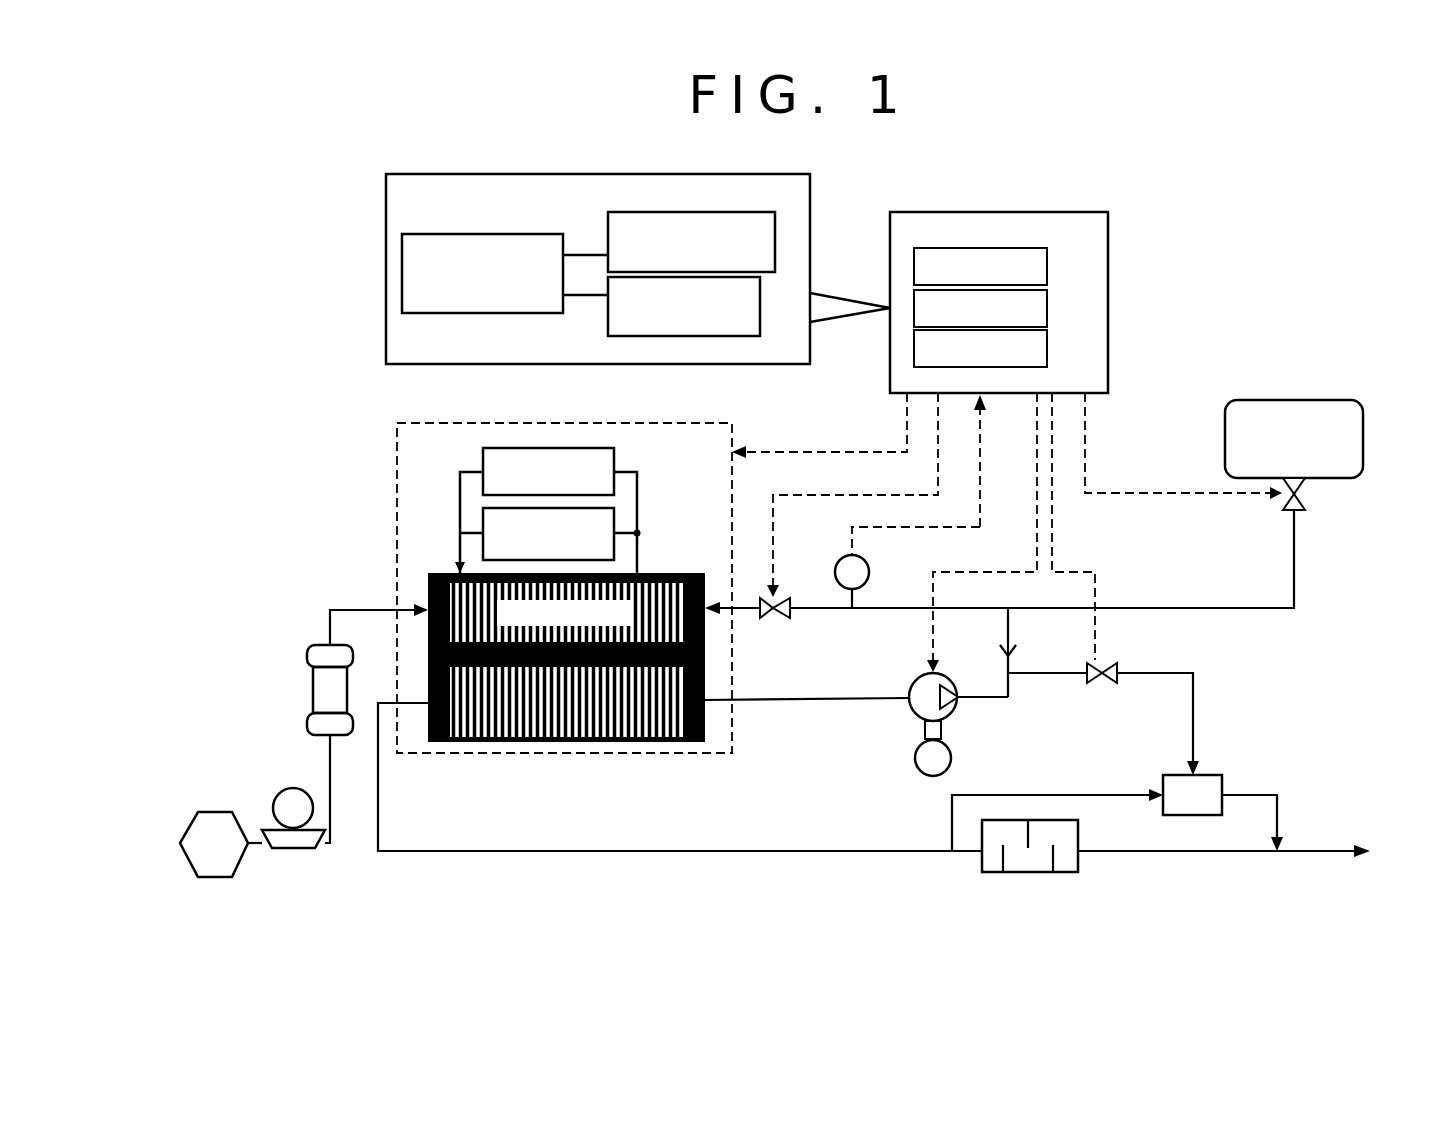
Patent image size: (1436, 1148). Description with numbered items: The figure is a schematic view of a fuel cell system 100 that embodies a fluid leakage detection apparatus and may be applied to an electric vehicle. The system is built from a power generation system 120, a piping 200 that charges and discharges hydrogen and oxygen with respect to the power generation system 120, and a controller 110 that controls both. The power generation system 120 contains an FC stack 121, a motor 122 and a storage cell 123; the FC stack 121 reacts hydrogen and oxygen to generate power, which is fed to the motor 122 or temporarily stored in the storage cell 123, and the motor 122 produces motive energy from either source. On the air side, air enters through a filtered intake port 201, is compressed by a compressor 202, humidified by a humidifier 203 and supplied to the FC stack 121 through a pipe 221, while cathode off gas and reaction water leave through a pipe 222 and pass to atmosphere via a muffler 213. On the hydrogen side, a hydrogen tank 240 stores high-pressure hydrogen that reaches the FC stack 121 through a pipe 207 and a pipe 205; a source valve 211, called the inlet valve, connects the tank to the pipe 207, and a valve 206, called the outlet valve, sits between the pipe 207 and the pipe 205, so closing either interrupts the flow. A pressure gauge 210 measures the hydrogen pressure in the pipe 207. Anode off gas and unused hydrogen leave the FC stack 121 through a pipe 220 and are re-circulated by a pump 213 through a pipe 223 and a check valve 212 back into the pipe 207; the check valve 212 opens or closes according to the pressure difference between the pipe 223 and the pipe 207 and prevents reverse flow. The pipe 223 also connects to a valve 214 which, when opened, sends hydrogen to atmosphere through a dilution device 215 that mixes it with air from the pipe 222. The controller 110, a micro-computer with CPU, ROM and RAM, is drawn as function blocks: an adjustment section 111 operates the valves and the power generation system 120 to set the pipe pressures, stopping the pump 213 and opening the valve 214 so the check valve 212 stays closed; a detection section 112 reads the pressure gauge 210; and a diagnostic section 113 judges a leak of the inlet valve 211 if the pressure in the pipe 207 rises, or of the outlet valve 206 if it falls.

The fuel cell system 100 is at (1308, 227).
The controller 110 is at (1108, 308).
The adjustment section 111 is at (720, 212).
The detection section 112 is at (608, 327).
The diagnostic section 113 is at (470, 234).
The power generation system 120 is at (425, 420).
The FC stack 121 is at (485, 756).
The motor 122 is at (483, 462).
The storage cell 123 is at (483, 520).
The piping 200 is at (846, 826).
The intake port 201 is at (213, 812).
The compressor 202 is at (295, 850).
The humidifier 203 is at (307, 690).
The pipe 205 is at (750, 612).
The valve 206 is at (777, 596).
The pipe 207 is at (884, 612).
The pressure gauge 210 is at (892, 565).
The source valve 211 is at (1302, 500).
The check valve 212 is at (1012, 648).
The pump 213 is at (910, 710).
The valve 214 is at (1106, 686).
The dilution device 215 is at (1222, 780).
The pipe 220 is at (820, 703).
The pipe 221 is at (360, 608).
The pipe 222 is at (420, 705).
The pipe 223 is at (1010, 697).
The hydrogen tank 240 is at (1292, 400).